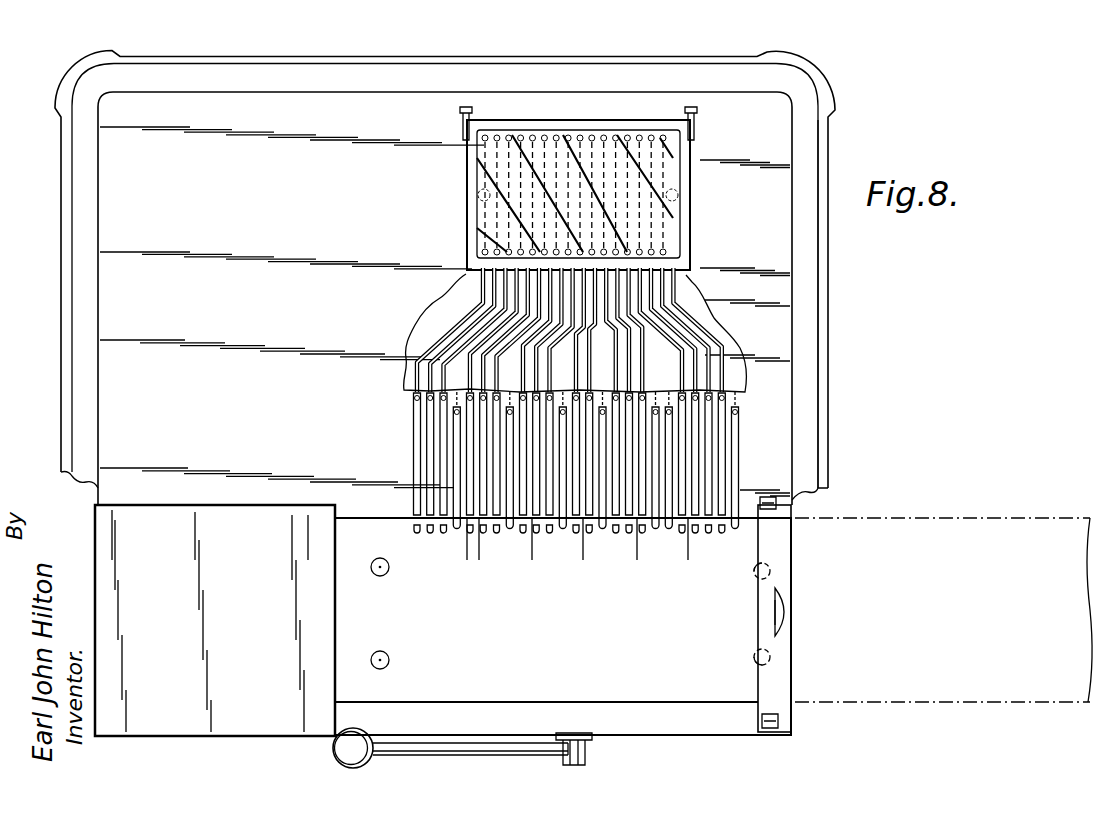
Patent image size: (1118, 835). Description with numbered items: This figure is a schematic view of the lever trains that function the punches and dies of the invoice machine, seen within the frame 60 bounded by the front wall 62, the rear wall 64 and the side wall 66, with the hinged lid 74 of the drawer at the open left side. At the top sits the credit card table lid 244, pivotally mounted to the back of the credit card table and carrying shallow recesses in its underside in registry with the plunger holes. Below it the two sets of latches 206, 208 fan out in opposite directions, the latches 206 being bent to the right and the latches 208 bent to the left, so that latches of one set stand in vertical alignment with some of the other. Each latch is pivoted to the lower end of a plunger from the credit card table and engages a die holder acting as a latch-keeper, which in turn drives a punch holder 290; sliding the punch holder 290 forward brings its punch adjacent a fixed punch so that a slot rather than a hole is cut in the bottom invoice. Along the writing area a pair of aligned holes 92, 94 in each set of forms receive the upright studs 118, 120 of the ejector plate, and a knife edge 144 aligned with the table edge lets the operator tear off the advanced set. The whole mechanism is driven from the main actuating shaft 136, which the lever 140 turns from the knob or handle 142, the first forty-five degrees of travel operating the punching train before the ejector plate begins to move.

The frame 60 is at (97, 275).
The front wall 62 is at (713, 735).
The rear wall 64 is at (400, 92).
The side wall 66 is at (792, 330).
The hinged lid 74 is at (215, 620).
The aligned hole 92 is at (380, 577).
The aligned hole 94 is at (392, 660).
The upright stud 118 is at (775, 569).
The upright stud 120 is at (773, 661).
The main actuating shaft 136 is at (587, 756).
The lever 140 is at (488, 752).
The knob or handle 142 is at (333, 754).
The knife edge 144 is at (780, 649).
The latch 206 is at (667, 292).
The latch 208 is at (570, 330).
The credit card table lid 244 is at (683, 162).
The punch holder 290 is at (445, 445).